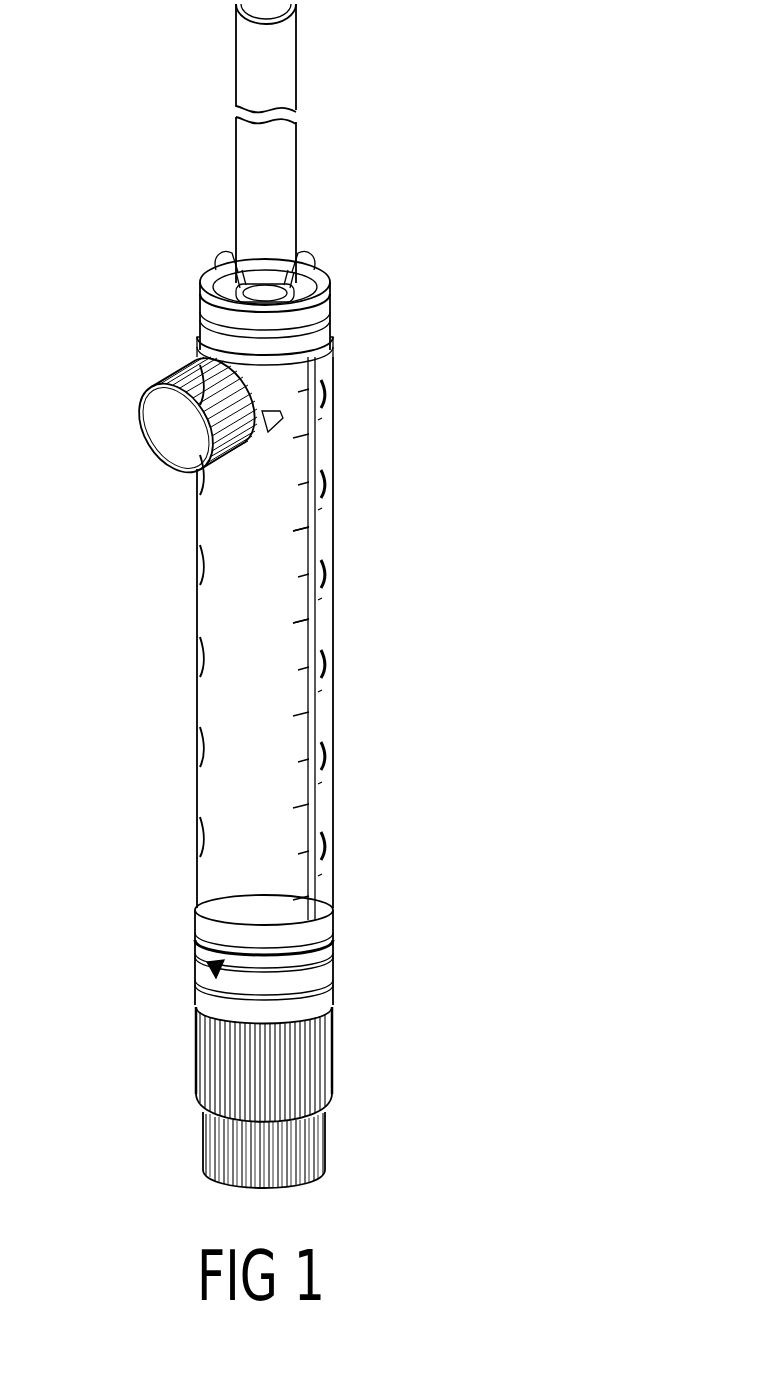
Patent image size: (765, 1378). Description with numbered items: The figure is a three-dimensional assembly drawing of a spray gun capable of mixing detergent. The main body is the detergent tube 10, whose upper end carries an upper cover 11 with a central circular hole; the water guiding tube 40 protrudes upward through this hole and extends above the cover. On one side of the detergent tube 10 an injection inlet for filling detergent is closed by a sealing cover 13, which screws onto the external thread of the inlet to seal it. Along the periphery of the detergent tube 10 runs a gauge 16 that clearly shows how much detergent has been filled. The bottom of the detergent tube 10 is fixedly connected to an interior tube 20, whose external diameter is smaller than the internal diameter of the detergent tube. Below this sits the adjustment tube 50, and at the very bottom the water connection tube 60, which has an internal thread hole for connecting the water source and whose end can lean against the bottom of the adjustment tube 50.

The detergent tube 10 is at (248, 697).
The upper cover 11 is at (322, 285).
The sealing cover 13 is at (175, 428).
The gauge 16 is at (300, 531).
The interior tube 20 is at (198, 969).
The water guiding tube 40 is at (262, 181).
The adjustment tube 50 is at (287, 1013).
The water connection tube 60 is at (302, 1157).